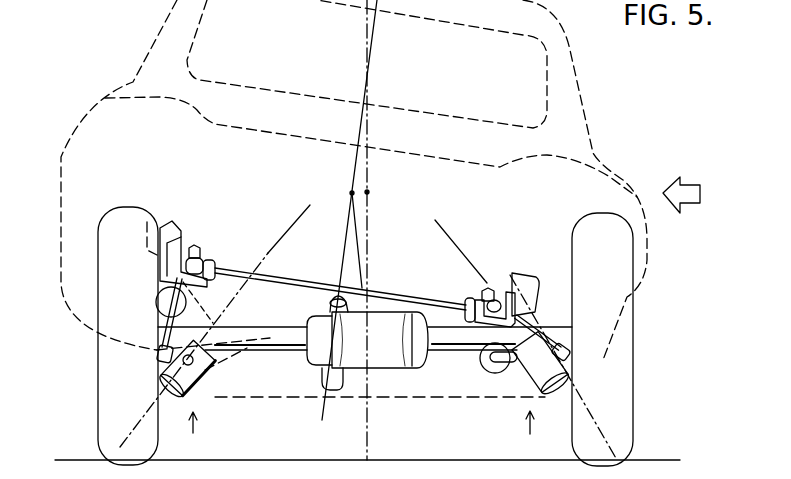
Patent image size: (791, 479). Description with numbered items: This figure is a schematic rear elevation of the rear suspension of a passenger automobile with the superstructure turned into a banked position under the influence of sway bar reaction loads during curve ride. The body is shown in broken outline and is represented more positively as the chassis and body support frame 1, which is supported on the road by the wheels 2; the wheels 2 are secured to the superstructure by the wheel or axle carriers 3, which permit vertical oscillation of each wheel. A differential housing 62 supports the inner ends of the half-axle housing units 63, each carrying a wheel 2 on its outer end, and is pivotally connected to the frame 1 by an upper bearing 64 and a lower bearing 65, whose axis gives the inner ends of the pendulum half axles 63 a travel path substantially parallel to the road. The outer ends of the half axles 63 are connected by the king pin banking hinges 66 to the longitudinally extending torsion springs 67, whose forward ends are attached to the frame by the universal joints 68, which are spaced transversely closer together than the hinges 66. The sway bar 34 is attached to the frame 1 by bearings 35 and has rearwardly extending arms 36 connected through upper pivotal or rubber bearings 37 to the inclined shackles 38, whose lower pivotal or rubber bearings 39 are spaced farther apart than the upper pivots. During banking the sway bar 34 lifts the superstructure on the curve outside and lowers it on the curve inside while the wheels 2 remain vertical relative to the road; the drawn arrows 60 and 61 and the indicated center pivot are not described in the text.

The chassis and body support frame 1 is at (167, 223).
The wheels 2 is at (100, 435).
The wheel or axle carriers 3 is at (361, 432).
The sway bar 34 is at (298, 277).
The bearings 35 is at (216, 265).
The longitudinally extending arms 36 is at (203, 258).
The upper pivotal or rubber bearings 37 is at (195, 245).
The inclined shackles 38 is at (167, 333).
The lower pivotal or rubber bearings 39 is at (160, 363).
The lateral force arrow 60 is at (690, 182).
The roll center pivot 61 is at (352, 193).
The differential housing 62 is at (375, 318).
The half-axle housing units 63 is at (280, 340).
The upper bearing 64 is at (338, 300).
The lower bearing 65 is at (323, 380).
The king pin banking hinges 66 is at (183, 378).
The longitudinally extending torsion springs 67 is at (210, 364).
The universal joints 68 is at (188, 304).